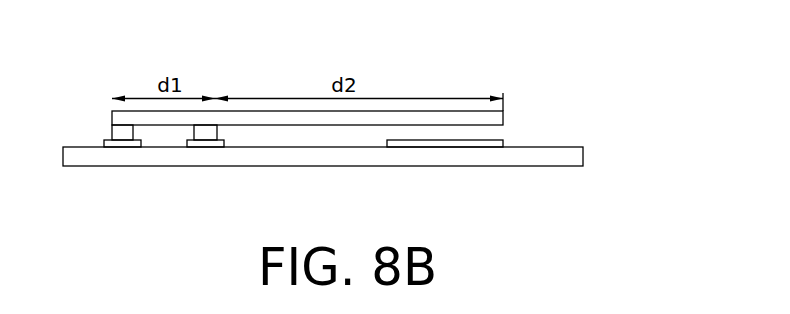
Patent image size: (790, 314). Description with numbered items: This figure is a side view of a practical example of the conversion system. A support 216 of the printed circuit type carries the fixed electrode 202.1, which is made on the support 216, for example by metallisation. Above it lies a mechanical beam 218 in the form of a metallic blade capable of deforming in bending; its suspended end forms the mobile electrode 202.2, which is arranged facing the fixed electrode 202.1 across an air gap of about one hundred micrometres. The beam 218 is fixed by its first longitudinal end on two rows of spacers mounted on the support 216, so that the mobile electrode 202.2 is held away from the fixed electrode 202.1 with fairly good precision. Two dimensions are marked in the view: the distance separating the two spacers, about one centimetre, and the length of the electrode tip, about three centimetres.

The support 216 is at (573, 158).
The mobile electrode 202.2 is at (494, 120).
The fixed electrode 202.1 is at (420, 143).
The mechanical beam 218 is at (202, 133).